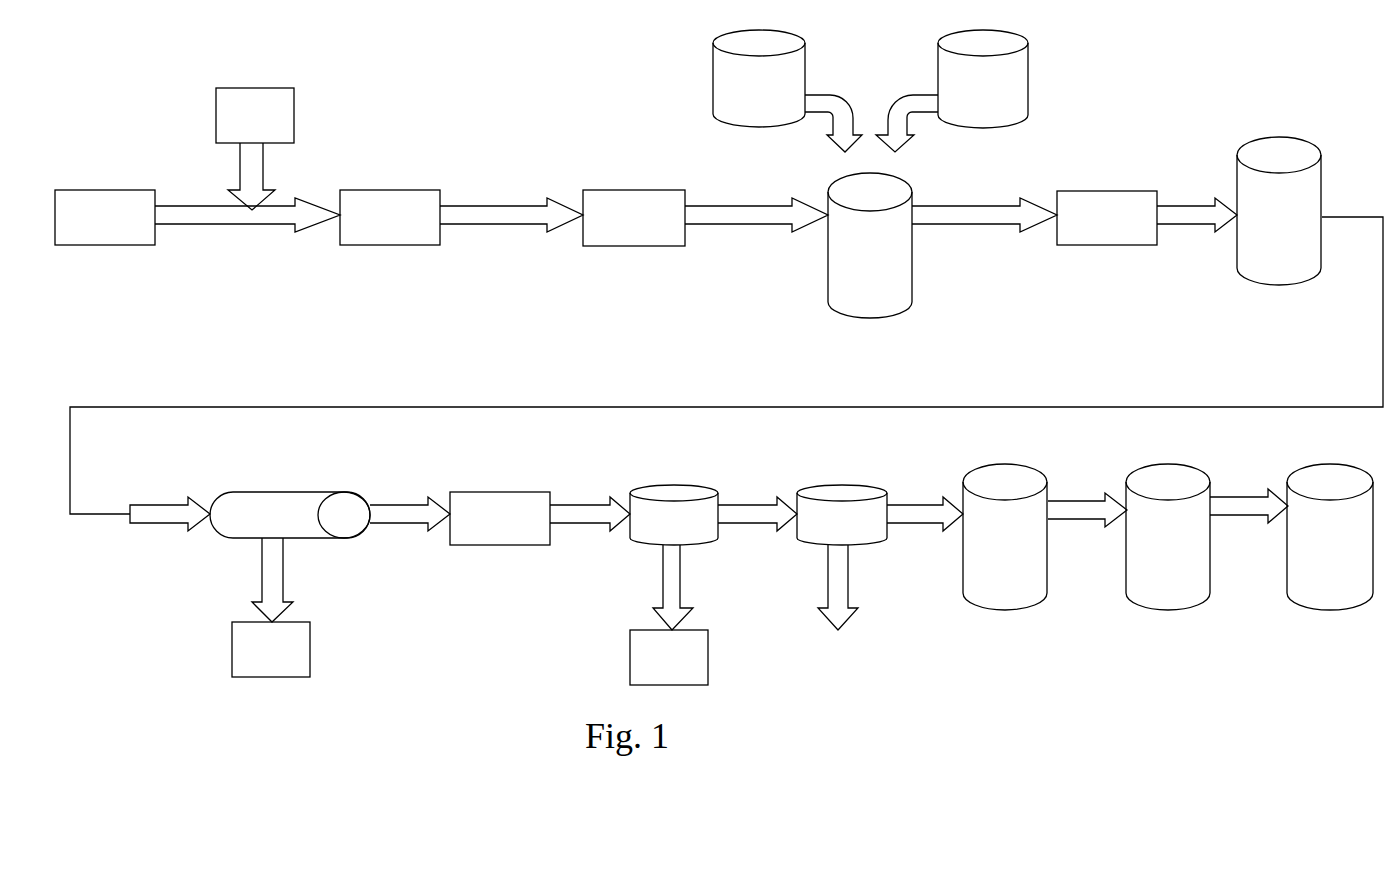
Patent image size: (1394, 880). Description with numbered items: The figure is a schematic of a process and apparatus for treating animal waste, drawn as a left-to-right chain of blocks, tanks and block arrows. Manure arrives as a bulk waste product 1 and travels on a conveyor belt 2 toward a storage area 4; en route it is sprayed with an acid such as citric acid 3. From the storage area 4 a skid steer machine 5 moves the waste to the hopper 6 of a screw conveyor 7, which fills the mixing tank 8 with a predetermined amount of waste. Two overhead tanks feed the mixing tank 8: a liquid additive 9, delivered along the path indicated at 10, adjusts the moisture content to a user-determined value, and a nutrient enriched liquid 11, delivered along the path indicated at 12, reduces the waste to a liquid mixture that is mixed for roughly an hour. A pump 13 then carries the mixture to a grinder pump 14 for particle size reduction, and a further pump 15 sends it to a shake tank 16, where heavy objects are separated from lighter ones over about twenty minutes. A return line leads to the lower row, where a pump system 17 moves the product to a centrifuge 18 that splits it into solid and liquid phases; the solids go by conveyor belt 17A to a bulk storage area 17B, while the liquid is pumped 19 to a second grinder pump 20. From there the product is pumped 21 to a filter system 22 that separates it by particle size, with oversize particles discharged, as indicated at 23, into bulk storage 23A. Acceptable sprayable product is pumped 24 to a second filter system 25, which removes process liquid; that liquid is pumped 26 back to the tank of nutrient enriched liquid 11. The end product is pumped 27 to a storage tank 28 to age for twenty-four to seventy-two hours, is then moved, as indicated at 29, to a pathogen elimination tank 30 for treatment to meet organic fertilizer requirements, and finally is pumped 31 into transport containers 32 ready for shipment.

The bulk waste product 1 is at (103, 190).
The conveyor belt 2 is at (197, 225).
The citric acid 3 is at (256, 88).
The storage area 4 is at (390, 245).
The skid steer machine 5 is at (494, 225).
The hopper 6 is at (630, 190).
The screw conveyor 7 is at (732, 225).
The mixing tank 8 is at (828, 305).
The liquid additive 9 is at (713, 68).
The first reagent feed 10 is at (822, 116).
The nutrient enriched liquid 11 is at (1028, 63).
The second reagent feed 12 is at (913, 115).
The pump 13 is at (972, 225).
The grinder pump 14 is at (1105, 245).
The pump 15 is at (1187, 205).
The shake tank 16 is at (1280, 285).
The pump system 17 is at (152, 523).
The conveyor belt 17A is at (260, 568).
The bulk storage area 17B is at (232, 665).
The centrifuge 18 is at (283, 492).
The pump 19 is at (400, 523).
The second grinder pump 20 is at (496, 545).
The pump 21 is at (583, 505).
The filter system 22 is at (683, 500).
The first sediment discharge 23 is at (682, 575).
The bulk storage 23A is at (630, 662).
The pump 24 is at (762, 505).
The second filter system 25 is at (840, 507).
The pump 26 is at (848, 575).
The pump 27 is at (918, 505).
The storage tank 28 is at (998, 610).
The first storage outlet stream 29 is at (1073, 501).
The pathogen elimination tank 30 is at (1167, 610).
The pump 31 is at (1250, 497).
The transport containers 32 is at (1338, 610).